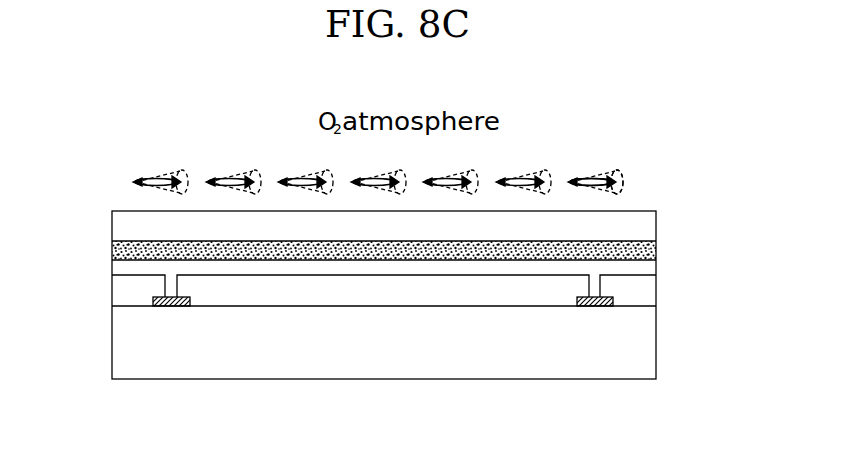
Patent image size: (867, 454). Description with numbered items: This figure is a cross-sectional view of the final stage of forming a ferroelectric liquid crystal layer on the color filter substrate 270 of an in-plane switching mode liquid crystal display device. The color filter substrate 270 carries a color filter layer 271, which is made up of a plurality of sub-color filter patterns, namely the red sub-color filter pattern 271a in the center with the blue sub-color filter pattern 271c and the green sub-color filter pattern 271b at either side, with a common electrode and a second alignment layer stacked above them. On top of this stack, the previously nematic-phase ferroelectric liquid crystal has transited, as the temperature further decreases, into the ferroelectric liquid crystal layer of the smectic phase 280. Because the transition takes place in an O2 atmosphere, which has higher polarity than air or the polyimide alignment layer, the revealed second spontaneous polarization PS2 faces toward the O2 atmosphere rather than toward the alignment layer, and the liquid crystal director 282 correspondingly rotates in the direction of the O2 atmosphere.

The ferroelectric liquid crystal layer of a smectic phase (SmC*) 280 is at (635, 157).
The liquid crystal director 282 is at (583, 178).
The second spontaneous polarization PS2 is at (616, 177).
The color filter substrate 270 is at (102, 261).
The color filter layer 271 is at (613, 373).
The red sub-color filter pattern 271a is at (325, 298).
The green sub-color filter pattern 271b is at (618, 307).
The blue sub-color filter pattern 271c is at (150, 307).